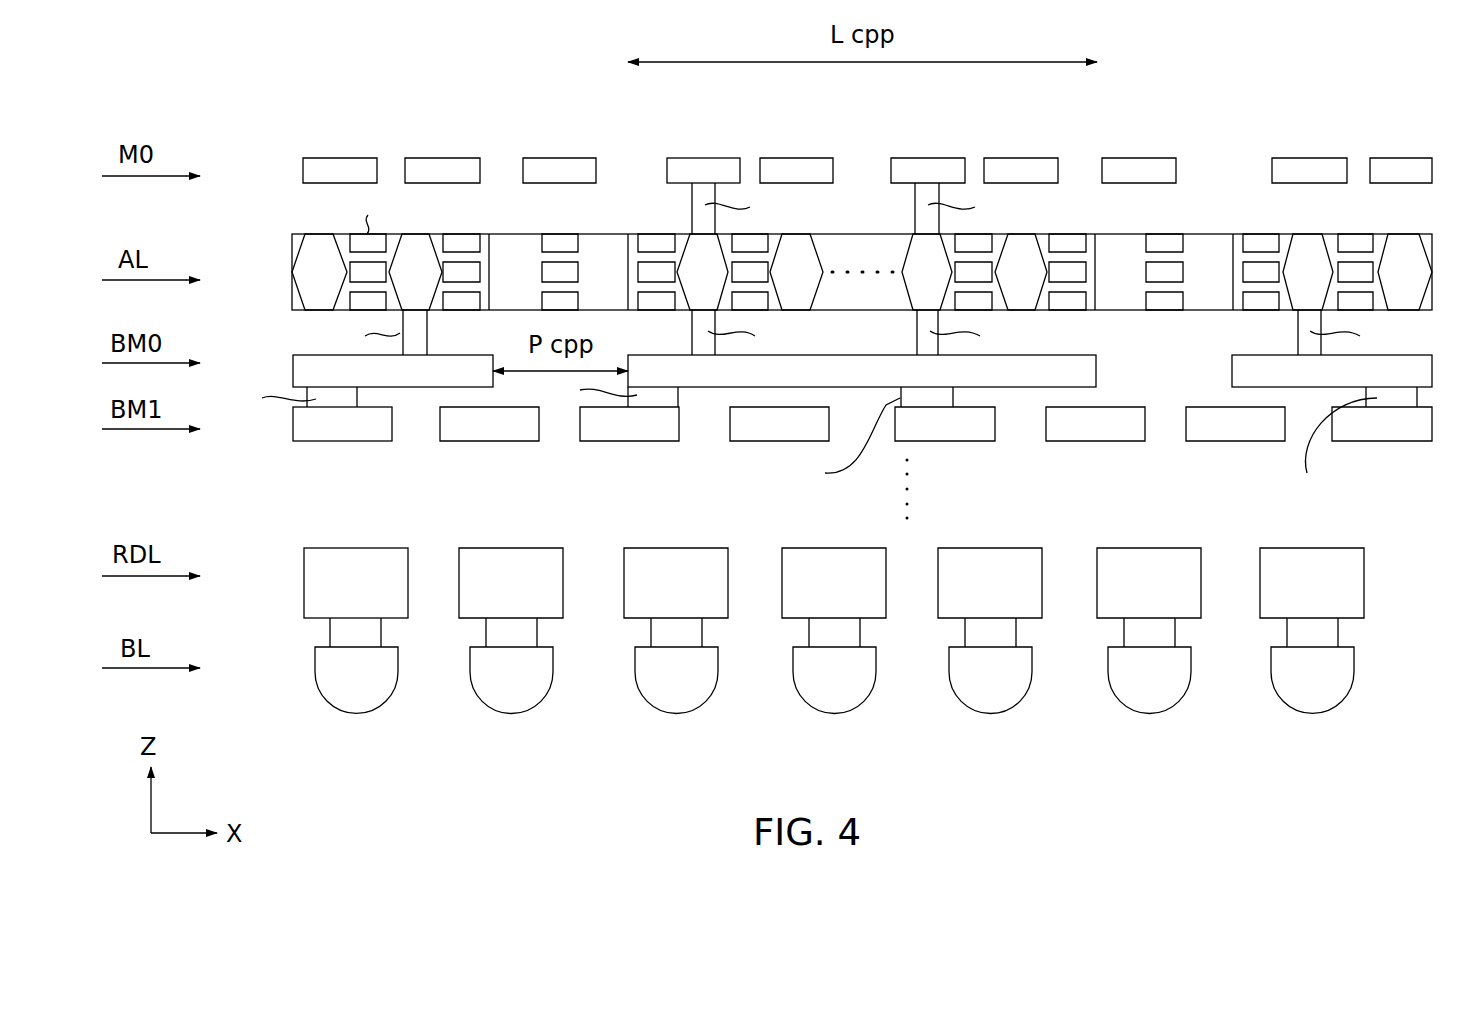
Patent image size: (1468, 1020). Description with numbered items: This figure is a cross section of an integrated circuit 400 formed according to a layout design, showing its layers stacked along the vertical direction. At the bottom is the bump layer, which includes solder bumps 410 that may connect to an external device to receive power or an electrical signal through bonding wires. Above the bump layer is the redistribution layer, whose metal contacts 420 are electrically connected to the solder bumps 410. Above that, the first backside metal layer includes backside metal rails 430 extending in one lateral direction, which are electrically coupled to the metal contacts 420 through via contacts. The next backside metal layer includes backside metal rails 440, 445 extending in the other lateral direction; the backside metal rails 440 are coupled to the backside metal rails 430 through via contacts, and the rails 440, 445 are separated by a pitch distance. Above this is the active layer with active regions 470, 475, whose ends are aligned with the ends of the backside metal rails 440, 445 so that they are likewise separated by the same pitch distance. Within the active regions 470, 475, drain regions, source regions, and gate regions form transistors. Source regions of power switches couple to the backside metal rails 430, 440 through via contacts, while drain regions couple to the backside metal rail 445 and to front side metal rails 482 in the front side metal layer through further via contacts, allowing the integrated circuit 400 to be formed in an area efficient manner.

The integrated circuit 400 is at (203, 82).
The solder bumps 410 is at (378, 683).
The metal contacts 420 is at (378, 597).
The backside metal rails 430 is at (340, 441).
The backside metal rails 440 is at (415, 383).
The backside metal rail 445 is at (885, 383).
The active region 470 is at (292, 245).
The active region 475 is at (628, 270).
The front side metal rails 482 is at (702, 165).